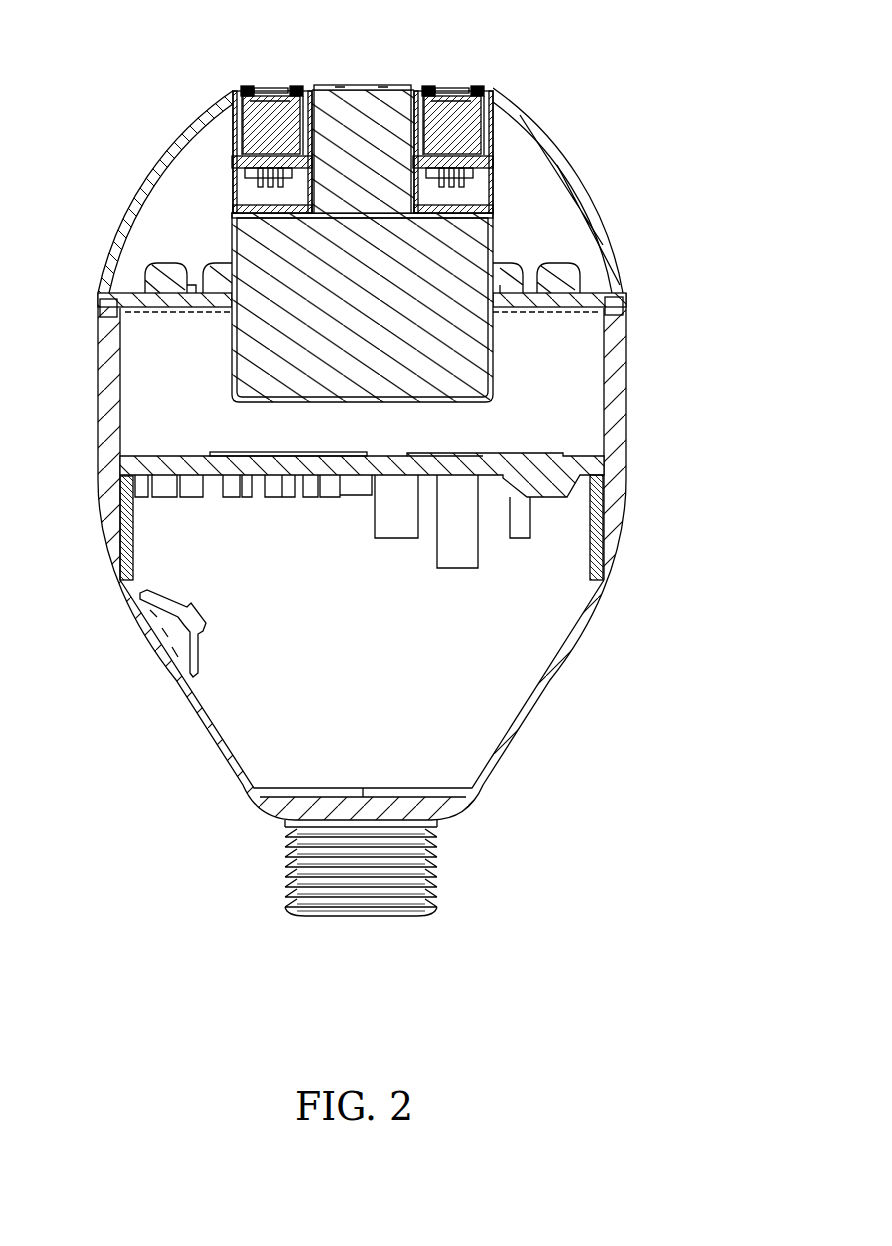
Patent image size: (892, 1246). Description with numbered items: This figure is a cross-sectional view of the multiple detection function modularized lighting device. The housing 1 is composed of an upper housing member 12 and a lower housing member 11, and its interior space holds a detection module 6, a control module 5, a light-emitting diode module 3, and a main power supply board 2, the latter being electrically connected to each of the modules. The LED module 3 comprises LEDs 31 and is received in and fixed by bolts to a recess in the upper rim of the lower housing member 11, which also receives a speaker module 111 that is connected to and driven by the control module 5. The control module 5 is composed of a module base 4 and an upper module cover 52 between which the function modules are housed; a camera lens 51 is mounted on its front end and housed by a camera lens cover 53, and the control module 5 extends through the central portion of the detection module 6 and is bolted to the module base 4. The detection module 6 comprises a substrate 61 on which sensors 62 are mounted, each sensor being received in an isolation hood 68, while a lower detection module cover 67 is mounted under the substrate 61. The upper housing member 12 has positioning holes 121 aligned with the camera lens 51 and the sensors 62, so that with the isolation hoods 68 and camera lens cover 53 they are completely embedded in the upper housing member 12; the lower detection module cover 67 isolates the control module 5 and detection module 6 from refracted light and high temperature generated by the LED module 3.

The housing 1 is at (374, 604).
The lower housing member 11 is at (497, 765).
The speaker module 111 is at (124, 632).
The upper housing member 12 is at (100, 275).
The positioning holes 121 is at (362, 80).
The main power supply board 2 is at (557, 497).
The light-emitting diode (LED) module 3 is at (365, 318).
The LEDs 31 is at (580, 283).
The module base 4 is at (490, 400).
The control module 5 is at (433, 219).
The camera lens 51 is at (362, 124).
The upper module cover 52 is at (495, 212).
The camera lens cover 53 is at (300, 86).
The detection module 6 is at (327, 135).
The substrate 61 is at (233, 157).
The sensors 62 is at (486, 91).
The lower detection module cover 67 is at (232, 192).
The isolation hoods 68 is at (242, 90).